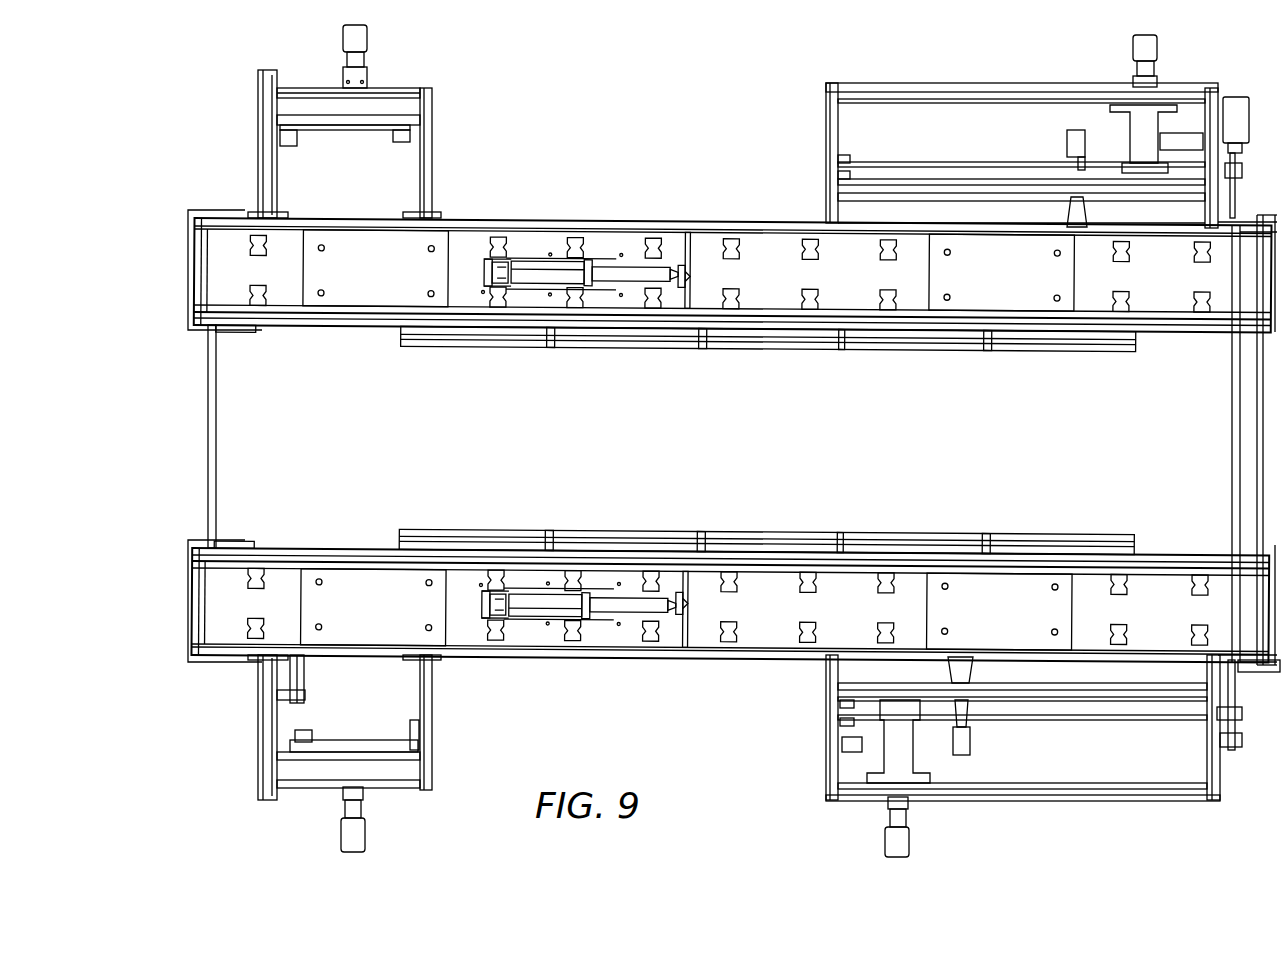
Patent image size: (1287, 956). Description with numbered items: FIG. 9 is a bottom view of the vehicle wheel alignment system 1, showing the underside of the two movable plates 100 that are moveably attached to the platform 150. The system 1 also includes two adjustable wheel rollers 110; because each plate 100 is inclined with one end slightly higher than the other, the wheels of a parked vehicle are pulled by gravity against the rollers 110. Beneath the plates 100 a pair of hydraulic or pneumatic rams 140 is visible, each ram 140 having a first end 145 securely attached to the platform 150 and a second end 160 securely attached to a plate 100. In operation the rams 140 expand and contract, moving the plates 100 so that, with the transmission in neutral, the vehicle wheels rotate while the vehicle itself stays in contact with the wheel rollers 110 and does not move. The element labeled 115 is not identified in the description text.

The vehicle wheel alignment system 1 is at (776, 58).
The movable plate 100 is at (515, 252).
The adjustable wheel roller 110 is at (285, 680).
The mounting plate 115 is at (345, 312).
The hydraulic or pneumatic ram 140 is at (595, 262).
The first end 145 is at (670, 283).
The platform 150 is at (686, 262).
The second end 160 is at (483, 252).